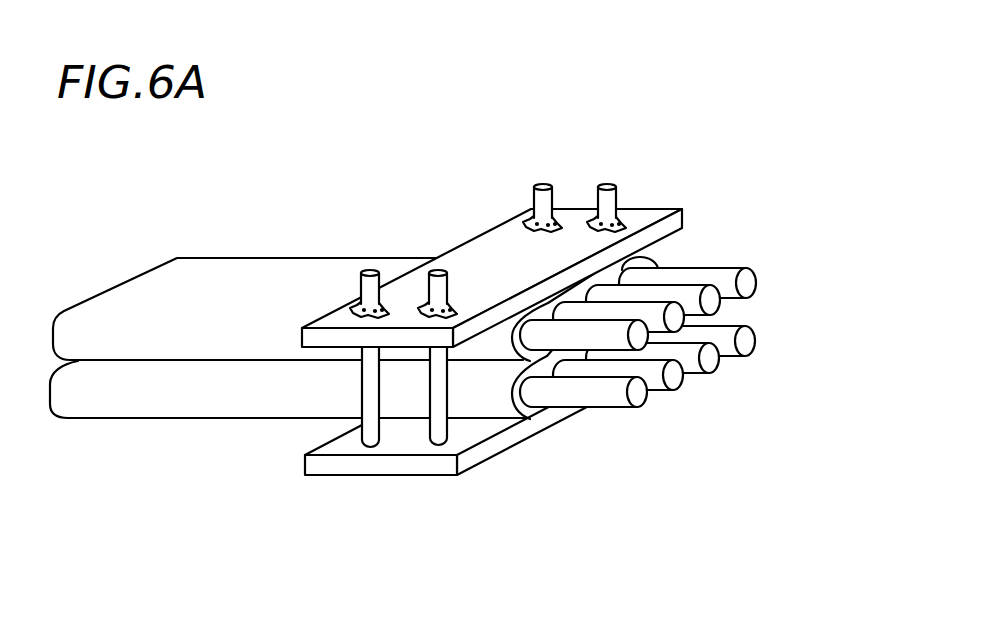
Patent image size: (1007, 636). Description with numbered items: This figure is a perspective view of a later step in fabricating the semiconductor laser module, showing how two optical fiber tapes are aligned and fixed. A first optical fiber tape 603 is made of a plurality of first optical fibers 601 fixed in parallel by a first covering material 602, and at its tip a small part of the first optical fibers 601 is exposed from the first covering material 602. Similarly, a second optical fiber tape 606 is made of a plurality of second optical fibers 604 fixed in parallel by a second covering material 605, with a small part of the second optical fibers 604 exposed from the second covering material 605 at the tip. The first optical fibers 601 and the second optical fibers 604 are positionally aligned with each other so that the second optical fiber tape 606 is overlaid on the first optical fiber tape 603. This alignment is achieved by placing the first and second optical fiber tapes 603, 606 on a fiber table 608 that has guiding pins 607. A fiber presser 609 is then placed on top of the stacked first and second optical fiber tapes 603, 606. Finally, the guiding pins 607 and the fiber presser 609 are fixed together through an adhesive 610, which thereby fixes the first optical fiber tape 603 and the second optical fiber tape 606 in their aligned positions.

The first optical fibers 601 is at (725, 355).
The first covering material 602 is at (527, 408).
The first optical fiber tape 603 is at (402, 461).
The second optical fibers 604 is at (718, 275).
The second covering material 605 is at (592, 290).
The second optical fiber tape 606 is at (404, 180).
The guiding pins 607 is at (438, 392).
The fiber table 608 is at (335, 446).
The fiber presser 609 is at (488, 252).
The adhesive 610 is at (428, 305).